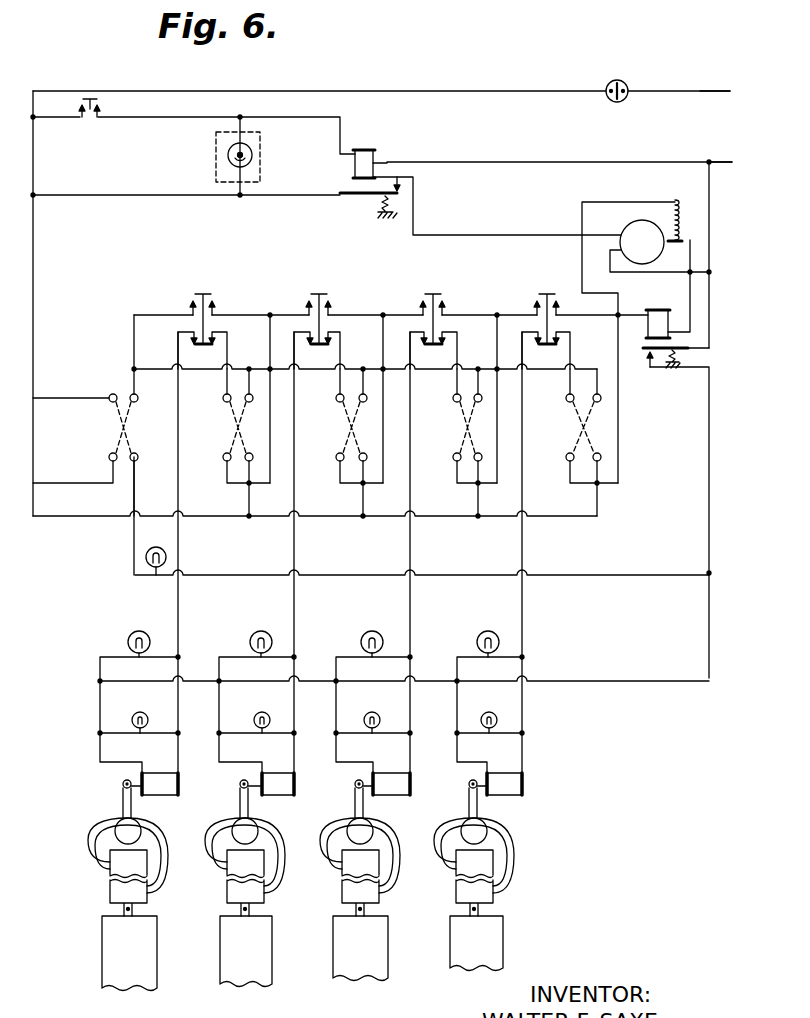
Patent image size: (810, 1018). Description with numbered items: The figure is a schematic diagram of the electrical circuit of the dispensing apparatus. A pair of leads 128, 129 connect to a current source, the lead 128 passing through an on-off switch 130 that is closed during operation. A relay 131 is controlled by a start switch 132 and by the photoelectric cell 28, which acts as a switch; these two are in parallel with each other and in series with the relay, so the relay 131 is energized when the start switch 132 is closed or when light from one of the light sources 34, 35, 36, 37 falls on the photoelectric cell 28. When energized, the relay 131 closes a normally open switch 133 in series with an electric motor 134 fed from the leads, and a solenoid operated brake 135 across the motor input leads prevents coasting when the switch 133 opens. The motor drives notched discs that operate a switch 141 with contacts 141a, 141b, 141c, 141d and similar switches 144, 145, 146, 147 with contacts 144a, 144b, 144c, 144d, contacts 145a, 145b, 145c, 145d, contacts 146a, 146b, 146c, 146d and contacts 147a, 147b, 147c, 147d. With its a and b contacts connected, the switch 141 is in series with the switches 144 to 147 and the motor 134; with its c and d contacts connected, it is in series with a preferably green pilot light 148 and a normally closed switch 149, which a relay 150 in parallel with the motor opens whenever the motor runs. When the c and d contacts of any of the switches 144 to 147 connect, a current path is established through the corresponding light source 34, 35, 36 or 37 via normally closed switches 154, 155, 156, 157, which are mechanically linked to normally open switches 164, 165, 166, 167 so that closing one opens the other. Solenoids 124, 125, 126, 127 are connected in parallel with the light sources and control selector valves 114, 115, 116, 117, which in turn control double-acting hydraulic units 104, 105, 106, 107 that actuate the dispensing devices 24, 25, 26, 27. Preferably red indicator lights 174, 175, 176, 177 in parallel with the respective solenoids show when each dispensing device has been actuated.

The lead 128 is at (722, 80).
The lead 129 is at (715, 164).
The on-off switch 130 is at (624, 99).
The relay 131 is at (378, 158).
The start switch 132 is at (100, 104).
The normally open switch 133 is at (362, 199).
The electric motor 134 is at (662, 254).
The solenoid operated brake 135 is at (683, 222).
The photoelectric cell 28 is at (232, 168).
The normally closed switch 149 is at (676, 345).
The relay 150 is at (658, 310).
The switch 141 is at (104, 442).
The contact 141a is at (109, 460).
The contact 141b is at (152, 398).
The contact 141c is at (75, 411).
The contact 141d is at (152, 474).
The switch 144 is at (233, 442).
The contact 144a is at (223, 460).
The contact 144b is at (262, 399).
The contact 144c is at (222, 400).
The contact 144d is at (264, 474).
The switch 145 is at (347, 442).
The contact 145a is at (336, 460).
The contact 145b is at (376, 397).
The contact 145c is at (336, 400).
The contact 145d is at (378, 474).
The switch 146 is at (464, 442).
The contact 146a is at (453, 460).
The contact 146b is at (491, 397).
The contact 146c is at (453, 400).
The contact 146d is at (494, 474).
The switch 147 is at (604, 442).
The contact 147a is at (566, 460).
The contact 147b is at (601, 400).
The contact 147c is at (566, 400).
The contact 147d is at (601, 457).
The pilot light 148 is at (146, 562).
The normally closed switch 154 is at (214, 337).
The normally closed switch 155 is at (330, 337).
The normally closed switch 156 is at (444, 337).
The normally closed switch 157 is at (558, 337).
The normally open switch 164 is at (214, 307).
The normally open switch 165 is at (330, 307).
The normally open switch 166 is at (444, 307).
The normally open switch 167 is at (536, 300).
The light source 34 is at (144, 633).
The light source 35 is at (274, 625).
The light source 36 is at (385, 625).
The light source 37 is at (492, 632).
The indicator light 174 is at (148, 724).
The indicator light 175 is at (270, 724).
The indicator light 176 is at (380, 724).
The indicator light 177 is at (497, 723).
The solenoid 124 is at (160, 795).
The solenoid 125 is at (280, 795).
The solenoid 126 is at (395, 795).
The solenoid 127 is at (515, 795).
The selector valve 114 is at (136, 838).
The selector valve 115 is at (253, 838).
The selector valve 116 is at (368, 838).
The selector valve 117 is at (482, 838).
The double-acting hydraulic unit 104 is at (118, 893).
The double-acting hydraulic unit 105 is at (235, 893).
The double-acting hydraulic unit 106 is at (350, 893).
The double-acting hydraulic unit 107 is at (466, 893).
The dispensing device 24 is at (122, 983).
The dispensing device 25 is at (238, 980).
The dispensing device 26 is at (350, 974).
The dispensing device 27 is at (466, 963).